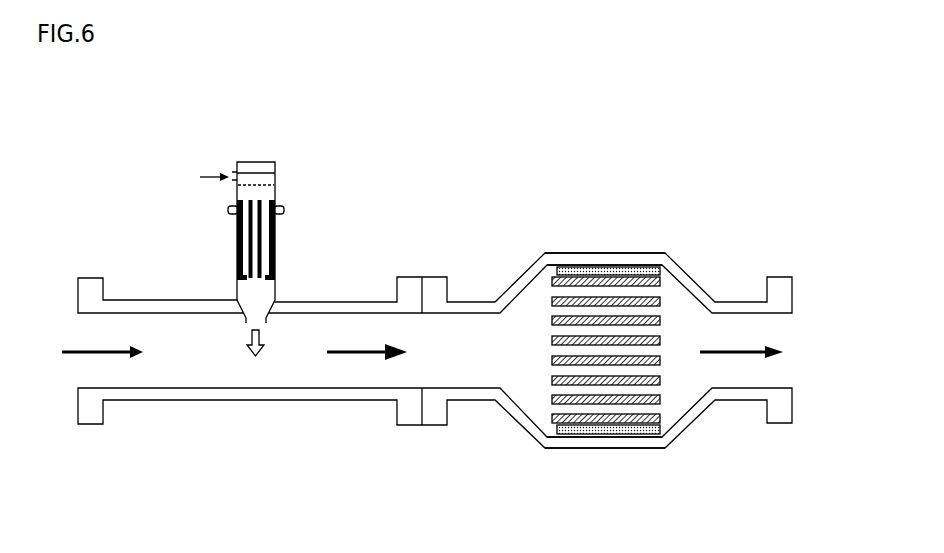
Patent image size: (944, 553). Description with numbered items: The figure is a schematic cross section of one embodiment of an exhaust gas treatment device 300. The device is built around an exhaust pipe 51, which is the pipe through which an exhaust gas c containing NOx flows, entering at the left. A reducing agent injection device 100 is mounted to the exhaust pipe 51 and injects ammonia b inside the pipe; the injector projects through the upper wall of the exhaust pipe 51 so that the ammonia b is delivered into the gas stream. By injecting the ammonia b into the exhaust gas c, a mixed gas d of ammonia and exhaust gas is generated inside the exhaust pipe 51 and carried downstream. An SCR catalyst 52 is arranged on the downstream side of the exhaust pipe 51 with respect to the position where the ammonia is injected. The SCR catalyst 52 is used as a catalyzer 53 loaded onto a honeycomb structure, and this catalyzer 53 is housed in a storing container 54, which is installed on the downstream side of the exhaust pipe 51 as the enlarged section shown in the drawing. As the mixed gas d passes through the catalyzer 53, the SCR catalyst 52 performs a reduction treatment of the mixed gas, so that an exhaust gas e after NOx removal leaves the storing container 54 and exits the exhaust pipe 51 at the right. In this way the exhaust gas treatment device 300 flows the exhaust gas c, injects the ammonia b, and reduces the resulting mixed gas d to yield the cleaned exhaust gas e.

The exhaust gas treatment device 300 is at (870, 135).
The exhaust pipe 51 is at (230, 406).
The SCR catalyst 52 is at (667, 315).
The catalyzer 53 is at (661, 340).
The storing container 54 is at (630, 253).
The reducing agent injection device 100 is at (282, 233).
The ammonia b is at (266, 338).
The exhaust gas c is at (115, 353).
The mixed gas d is at (358, 352).
The exhaust gas after NOx removal e is at (752, 353).